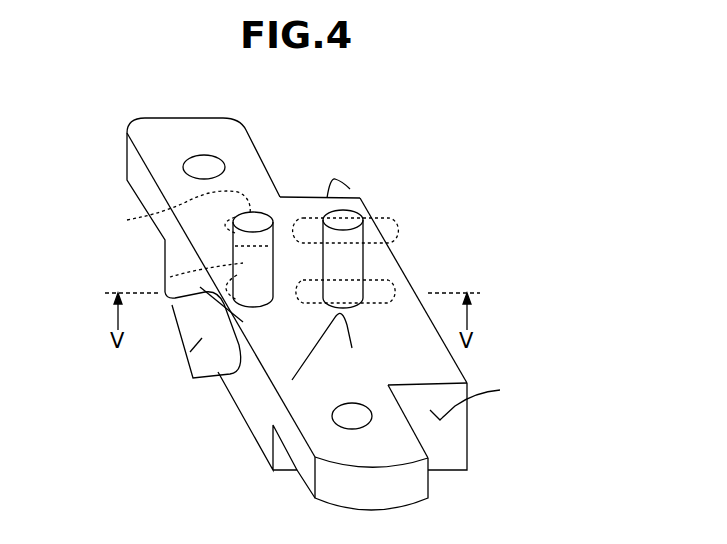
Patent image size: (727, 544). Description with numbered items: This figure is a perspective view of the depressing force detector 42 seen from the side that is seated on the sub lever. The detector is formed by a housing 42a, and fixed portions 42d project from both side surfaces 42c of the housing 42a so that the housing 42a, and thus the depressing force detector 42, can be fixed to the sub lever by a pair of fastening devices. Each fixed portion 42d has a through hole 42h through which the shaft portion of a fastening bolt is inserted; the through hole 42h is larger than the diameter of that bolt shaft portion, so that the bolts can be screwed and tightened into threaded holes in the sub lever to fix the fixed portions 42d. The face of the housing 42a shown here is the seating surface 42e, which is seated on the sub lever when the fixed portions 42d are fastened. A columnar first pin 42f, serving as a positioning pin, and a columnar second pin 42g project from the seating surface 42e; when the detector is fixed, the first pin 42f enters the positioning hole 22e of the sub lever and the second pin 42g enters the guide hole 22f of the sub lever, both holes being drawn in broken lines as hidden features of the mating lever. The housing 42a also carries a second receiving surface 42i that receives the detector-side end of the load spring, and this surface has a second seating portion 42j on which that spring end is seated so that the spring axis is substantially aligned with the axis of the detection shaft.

The depressing force detector 42 is at (362, 144).
The housing 42a is at (467, 413).
The side surfaces 42c is at (350, 189).
The fixed portions 42d is at (182, 133).
The seating surface 42e is at (292, 380).
The first pin 42f is at (152, 217).
The second pin 42g is at (343, 219).
The through holes 42h is at (207, 164).
The second receiving surface 42i is at (240, 264).
The second seating portion 42j is at (193, 350).
The positioning hole 22e is at (203, 243).
The guide hole 22f is at (398, 232).